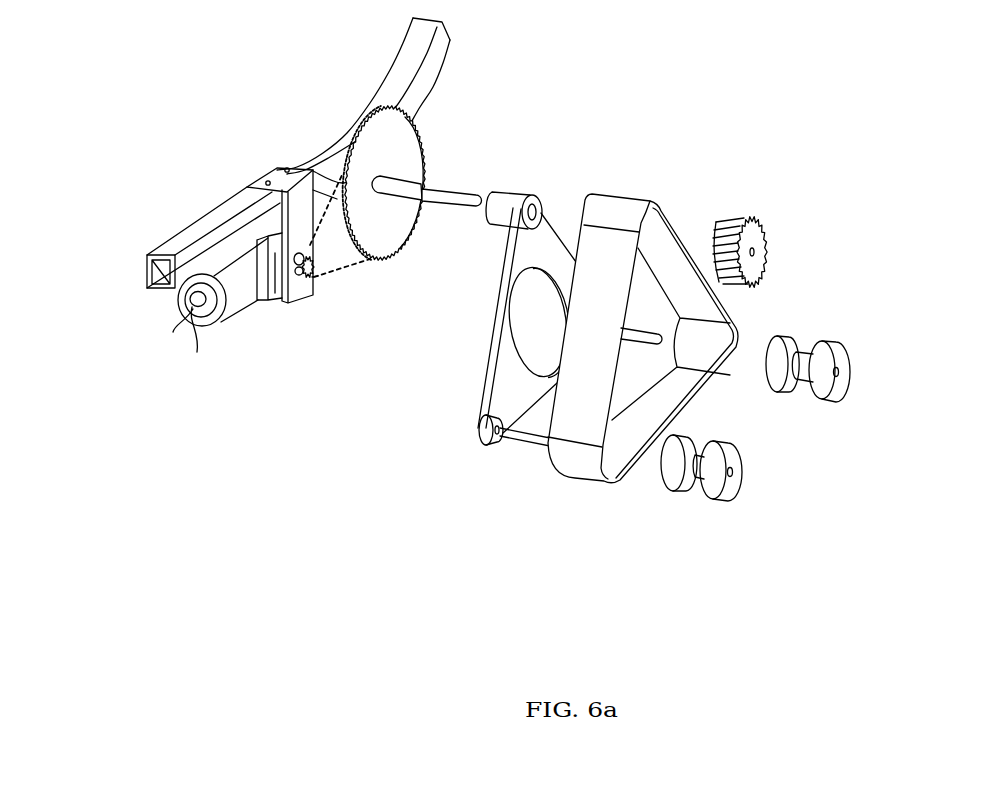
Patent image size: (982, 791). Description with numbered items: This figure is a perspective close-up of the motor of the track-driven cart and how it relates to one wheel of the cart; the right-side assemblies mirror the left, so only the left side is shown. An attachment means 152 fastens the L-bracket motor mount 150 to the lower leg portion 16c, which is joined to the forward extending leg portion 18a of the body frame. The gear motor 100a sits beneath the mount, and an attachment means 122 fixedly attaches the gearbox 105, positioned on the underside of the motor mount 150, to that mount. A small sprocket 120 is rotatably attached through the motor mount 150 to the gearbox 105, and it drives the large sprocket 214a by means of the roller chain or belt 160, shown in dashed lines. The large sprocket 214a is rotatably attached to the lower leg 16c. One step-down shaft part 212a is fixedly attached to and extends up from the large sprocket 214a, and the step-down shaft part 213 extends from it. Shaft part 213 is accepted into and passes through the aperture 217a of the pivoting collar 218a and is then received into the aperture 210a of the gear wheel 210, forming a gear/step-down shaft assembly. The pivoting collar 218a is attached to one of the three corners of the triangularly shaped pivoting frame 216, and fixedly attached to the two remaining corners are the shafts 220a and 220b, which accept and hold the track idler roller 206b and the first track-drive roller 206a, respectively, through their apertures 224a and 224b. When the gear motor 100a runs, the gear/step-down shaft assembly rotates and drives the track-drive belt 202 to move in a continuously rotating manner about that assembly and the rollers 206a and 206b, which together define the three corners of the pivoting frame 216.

The forward extending leg portion 18a is at (147, 255).
The attachment means 152 is at (255, 218).
The lower leg portion 16c is at (348, 108).
The gear motor 100a is at (223, 313).
The gearbox 105 is at (277, 297).
The attachment means 122 is at (303, 283).
The small sprocket 120 is at (307, 280).
The motor mount 150 is at (312, 277).
The roller drive chain or belt 160 is at (348, 272).
The large sprocket 214a is at (373, 260).
The step-down shaft part 212a is at (422, 184).
The step-down shaft part 213 is at (447, 203).
The pivoting collar 218a is at (522, 192).
The aperture 217a is at (542, 200).
The track-drive belt 202 is at (643, 319).
The shaft 220a is at (512, 445).
The triangularly shaped pivoting frame 216 is at (533, 447).
The shaft 220b is at (646, 345).
The gear wheel 210 is at (756, 223).
The aperture in gear wheel 210a is at (754, 256).
The aperture 224b is at (840, 371).
The first track-drive 206a is at (843, 397).
The aperture 224a is at (733, 476).
The track idler roller 206b is at (726, 502).